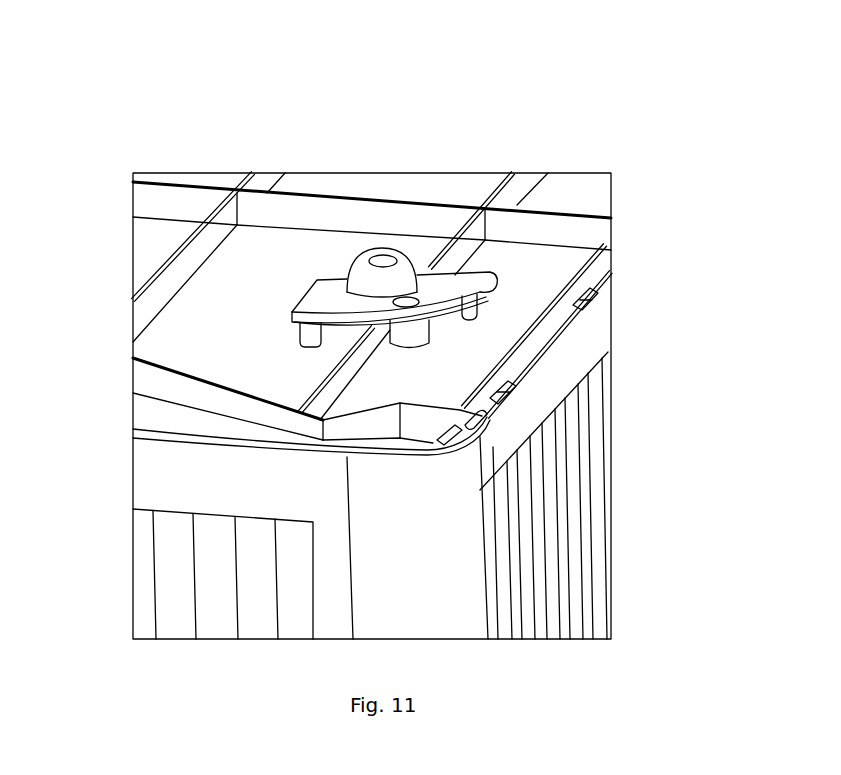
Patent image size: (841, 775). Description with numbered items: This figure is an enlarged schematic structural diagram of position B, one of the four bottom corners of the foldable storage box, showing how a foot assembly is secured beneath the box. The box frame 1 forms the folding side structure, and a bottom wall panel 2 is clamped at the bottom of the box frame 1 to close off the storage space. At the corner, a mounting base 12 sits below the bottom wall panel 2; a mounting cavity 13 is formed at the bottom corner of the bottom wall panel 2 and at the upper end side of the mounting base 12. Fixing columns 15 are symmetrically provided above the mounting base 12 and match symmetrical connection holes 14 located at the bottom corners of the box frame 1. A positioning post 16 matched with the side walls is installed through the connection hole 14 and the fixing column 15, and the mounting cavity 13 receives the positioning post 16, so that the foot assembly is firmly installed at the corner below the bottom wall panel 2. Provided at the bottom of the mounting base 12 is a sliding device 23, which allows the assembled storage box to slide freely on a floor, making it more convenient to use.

The position B is at (218, 172).
The box frame 1 is at (213, 578).
The bottom wall panel 2 is at (220, 325).
The mounting base 12 is at (425, 280).
The mounting cavity 13 is at (427, 452).
The connection hole 14 is at (480, 419).
The fixing column 15 is at (600, 246).
The positioning post 16 is at (417, 333).
The sliding device 23 is at (378, 265).